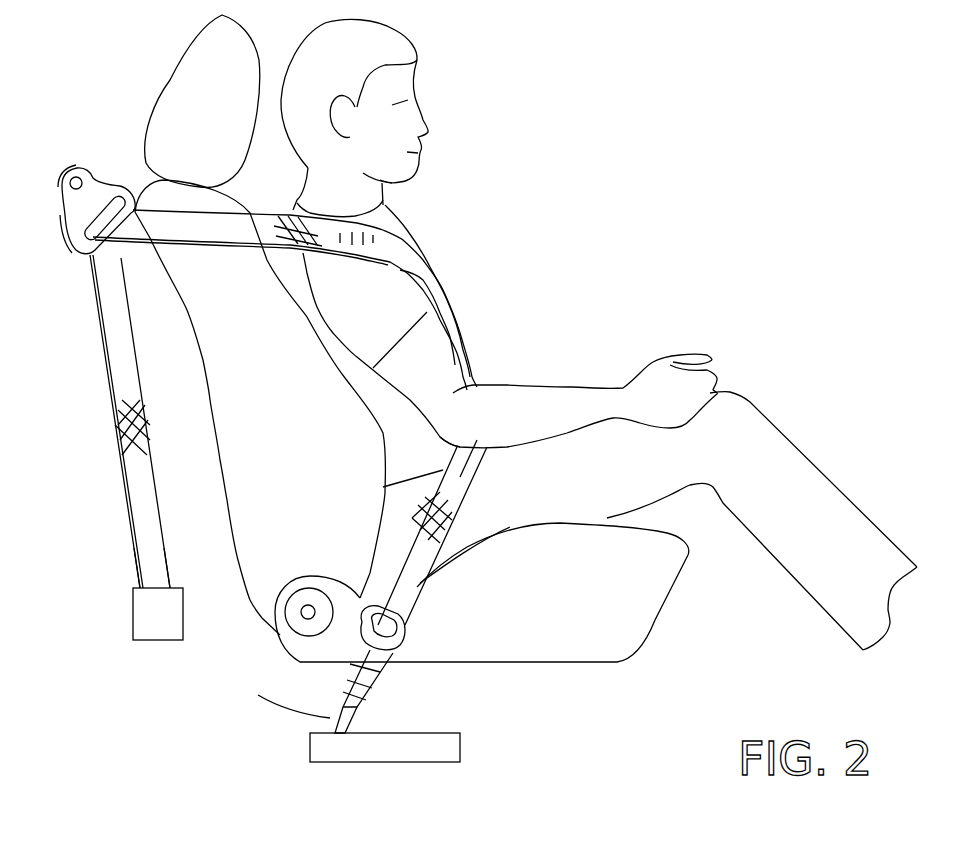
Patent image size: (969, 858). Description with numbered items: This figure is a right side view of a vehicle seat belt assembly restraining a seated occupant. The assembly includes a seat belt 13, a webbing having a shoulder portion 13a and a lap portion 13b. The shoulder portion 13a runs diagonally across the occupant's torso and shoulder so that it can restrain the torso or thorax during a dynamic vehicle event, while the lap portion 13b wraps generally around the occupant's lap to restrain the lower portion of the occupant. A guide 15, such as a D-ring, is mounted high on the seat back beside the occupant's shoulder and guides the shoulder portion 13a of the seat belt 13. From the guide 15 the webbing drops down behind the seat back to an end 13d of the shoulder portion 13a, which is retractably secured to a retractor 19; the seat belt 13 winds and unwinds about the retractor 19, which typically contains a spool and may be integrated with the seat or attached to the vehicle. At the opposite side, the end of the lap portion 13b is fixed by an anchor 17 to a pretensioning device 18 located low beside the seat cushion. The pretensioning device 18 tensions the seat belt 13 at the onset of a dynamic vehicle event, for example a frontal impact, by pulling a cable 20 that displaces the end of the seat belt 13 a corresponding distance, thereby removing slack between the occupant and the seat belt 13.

The seat belt 13 is at (117, 328).
The shoulder portion 13a is at (403, 260).
The lap portion 13b is at (460, 473).
The end 13d is at (150, 575).
The guide 15 is at (72, 172).
The anchor 17 is at (388, 654).
The pretensioning device 18 is at (303, 745).
The retractor 19 is at (169, 627).
The cable 20 is at (337, 731).